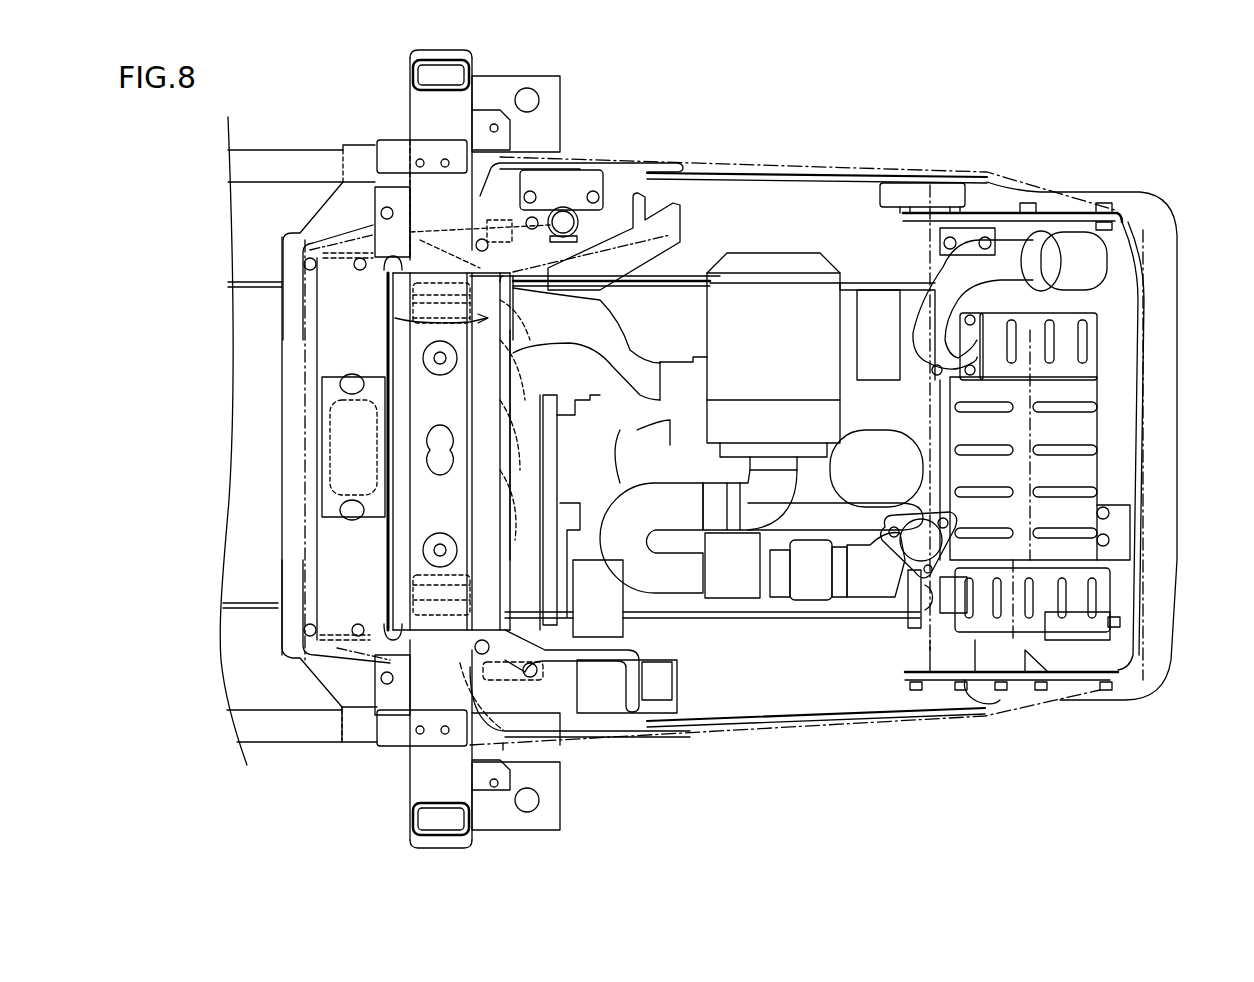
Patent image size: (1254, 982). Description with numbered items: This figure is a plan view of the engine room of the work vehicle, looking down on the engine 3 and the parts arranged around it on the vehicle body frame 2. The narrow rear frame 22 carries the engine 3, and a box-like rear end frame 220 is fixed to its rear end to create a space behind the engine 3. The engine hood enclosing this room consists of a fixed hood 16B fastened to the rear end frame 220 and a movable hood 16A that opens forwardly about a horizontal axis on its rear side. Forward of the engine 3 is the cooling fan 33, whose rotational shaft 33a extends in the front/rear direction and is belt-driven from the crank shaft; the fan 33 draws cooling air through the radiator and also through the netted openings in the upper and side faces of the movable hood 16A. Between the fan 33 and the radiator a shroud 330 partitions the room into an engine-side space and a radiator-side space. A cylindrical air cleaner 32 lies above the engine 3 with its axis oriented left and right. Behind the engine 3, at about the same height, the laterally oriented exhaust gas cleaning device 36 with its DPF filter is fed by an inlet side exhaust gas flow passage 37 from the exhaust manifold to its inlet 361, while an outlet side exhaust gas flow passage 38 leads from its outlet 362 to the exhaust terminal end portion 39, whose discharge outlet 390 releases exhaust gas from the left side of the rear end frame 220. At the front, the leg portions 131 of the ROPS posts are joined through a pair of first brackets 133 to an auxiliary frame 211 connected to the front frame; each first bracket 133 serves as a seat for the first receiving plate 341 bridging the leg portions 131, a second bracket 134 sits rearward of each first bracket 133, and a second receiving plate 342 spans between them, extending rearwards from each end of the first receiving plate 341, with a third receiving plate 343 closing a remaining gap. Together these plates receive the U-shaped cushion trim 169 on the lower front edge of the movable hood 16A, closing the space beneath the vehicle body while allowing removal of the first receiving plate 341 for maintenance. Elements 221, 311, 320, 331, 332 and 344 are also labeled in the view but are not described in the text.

The vehicle body frame 2 is at (251, 441).
The engine 3 is at (683, 365).
The movable hood 16A is at (738, 172).
The fixed hood 16B is at (1010, 182).
The rear frame 22 is at (675, 275).
The air cleaner 32 is at (775, 283).
The cooling fan 33 is at (527, 372).
The rotational shaft 33a is at (540, 428).
The exhaust gas cleaning device 36 is at (1085, 470).
The inlet side exhaust gas flow passage 37 is at (862, 610).
The outlet side exhaust gas flow passage 38 is at (945, 280).
The exhaust terminal end portion 39 is at (1085, 545).
The leg portion 131 is at (425, 118).
The first bracket 133 is at (325, 218).
The second bracket 134 is at (483, 660).
The cushion trim 169 is at (305, 430).
The auxiliary frame 211 is at (237, 168).
The rear end frame 220 is at (1068, 685).
The front cross member 221 is at (243, 730).
The radiator 311 is at (400, 460).
The radiator mount 320 is at (395, 312).
The shroud 330 is at (602, 240).
The upper rail 331 is at (605, 315).
The lower unit 332 is at (667, 590).
The first receiving plate 341 is at (290, 355).
The second receiving plate 342 is at (380, 200).
The third receiving plate 343 is at (567, 687).
The upper mounting bracket 344 is at (572, 185).
The inlet 361 is at (913, 600).
The outlet 362 is at (1085, 355).
The discharge outlet 390 is at (1110, 587).